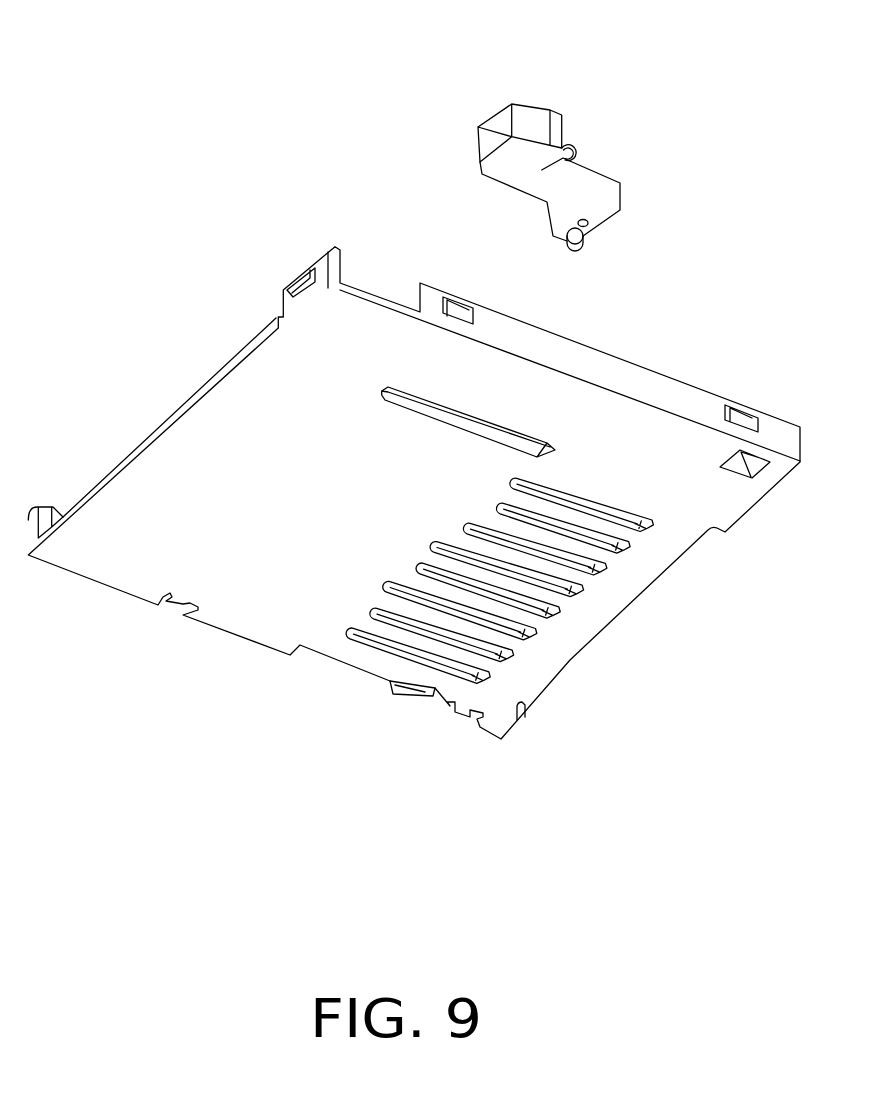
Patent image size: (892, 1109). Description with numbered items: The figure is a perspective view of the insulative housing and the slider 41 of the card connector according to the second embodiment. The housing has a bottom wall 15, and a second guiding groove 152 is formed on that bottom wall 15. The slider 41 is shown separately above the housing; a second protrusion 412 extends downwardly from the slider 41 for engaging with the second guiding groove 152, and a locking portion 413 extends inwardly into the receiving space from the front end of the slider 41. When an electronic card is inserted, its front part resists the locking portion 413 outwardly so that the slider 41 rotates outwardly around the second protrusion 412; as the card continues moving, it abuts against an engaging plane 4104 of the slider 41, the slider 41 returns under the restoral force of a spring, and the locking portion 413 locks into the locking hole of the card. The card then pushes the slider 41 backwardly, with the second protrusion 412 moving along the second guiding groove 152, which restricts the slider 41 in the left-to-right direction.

The bottom wall 15 is at (414, 493).
The second guiding groove 152 is at (462, 424).
The slider 41 is at (553, 137).
The locking portion 413 is at (488, 173).
The engaging plane 4104 is at (547, 218).
The second protrusion 412 is at (586, 250).